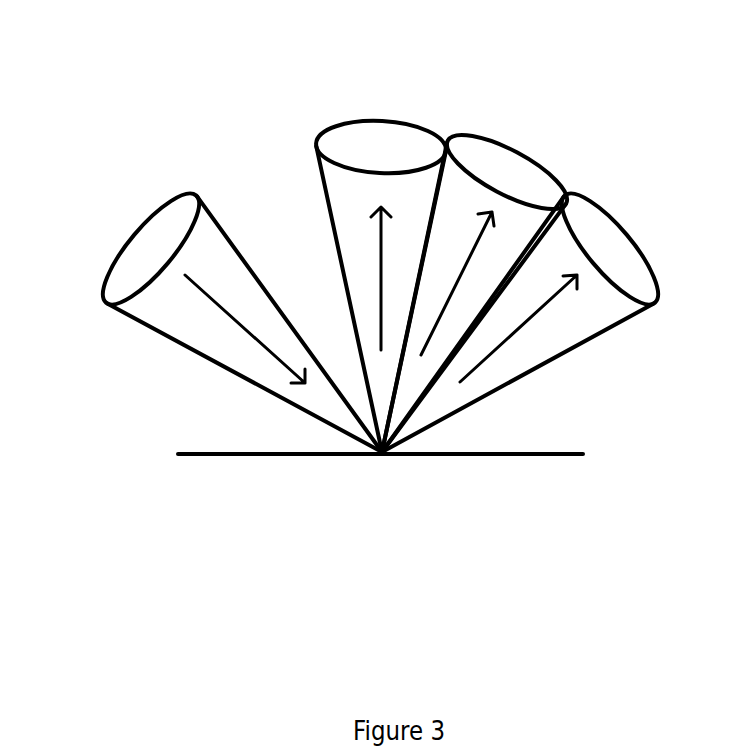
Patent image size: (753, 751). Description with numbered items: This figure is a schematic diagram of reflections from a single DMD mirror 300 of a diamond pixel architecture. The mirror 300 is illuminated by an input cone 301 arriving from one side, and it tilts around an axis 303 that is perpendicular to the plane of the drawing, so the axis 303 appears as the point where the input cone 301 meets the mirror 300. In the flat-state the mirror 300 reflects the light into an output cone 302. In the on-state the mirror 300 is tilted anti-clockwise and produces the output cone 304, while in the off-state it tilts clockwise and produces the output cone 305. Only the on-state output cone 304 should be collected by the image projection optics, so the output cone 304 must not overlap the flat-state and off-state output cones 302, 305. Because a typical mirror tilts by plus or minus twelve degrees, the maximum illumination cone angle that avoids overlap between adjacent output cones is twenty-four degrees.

The DMD mirror 300 is at (208, 468).
The input cone 301 is at (120, 222).
The output cone 302 is at (520, 142).
The axis 303 is at (379, 456).
The output cone 304 is at (382, 118).
The output cone 305 is at (632, 212).